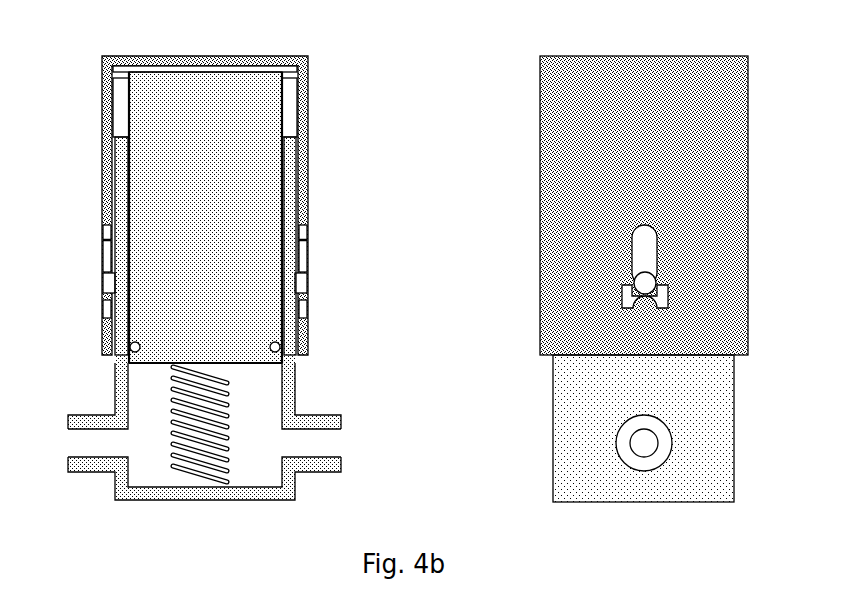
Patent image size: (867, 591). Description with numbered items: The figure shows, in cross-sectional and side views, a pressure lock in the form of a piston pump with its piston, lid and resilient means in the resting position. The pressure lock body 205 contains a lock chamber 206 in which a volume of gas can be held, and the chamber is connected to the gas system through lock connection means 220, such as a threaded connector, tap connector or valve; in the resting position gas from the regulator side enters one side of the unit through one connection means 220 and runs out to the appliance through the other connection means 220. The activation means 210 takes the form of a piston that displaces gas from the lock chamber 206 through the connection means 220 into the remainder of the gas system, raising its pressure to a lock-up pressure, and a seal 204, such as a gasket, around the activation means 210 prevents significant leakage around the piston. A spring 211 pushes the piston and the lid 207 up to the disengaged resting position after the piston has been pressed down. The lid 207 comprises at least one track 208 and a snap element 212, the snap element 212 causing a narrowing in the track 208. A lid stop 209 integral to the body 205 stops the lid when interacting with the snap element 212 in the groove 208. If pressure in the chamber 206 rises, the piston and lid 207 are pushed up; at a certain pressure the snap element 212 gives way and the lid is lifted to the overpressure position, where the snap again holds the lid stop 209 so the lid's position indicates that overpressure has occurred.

The seal 204 is at (130, 345).
The pressure lock body 205 is at (121, 395).
The lock chamber 206 is at (252, 427).
The lid 207 is at (108, 108).
The track 208 is at (632, 263).
The lid stop 209 is at (642, 280).
The activation means 210 is at (183, 80).
The spring 211 is at (225, 393).
The snap element 212 is at (622, 292).
The lock connection means 220 is at (108, 455).